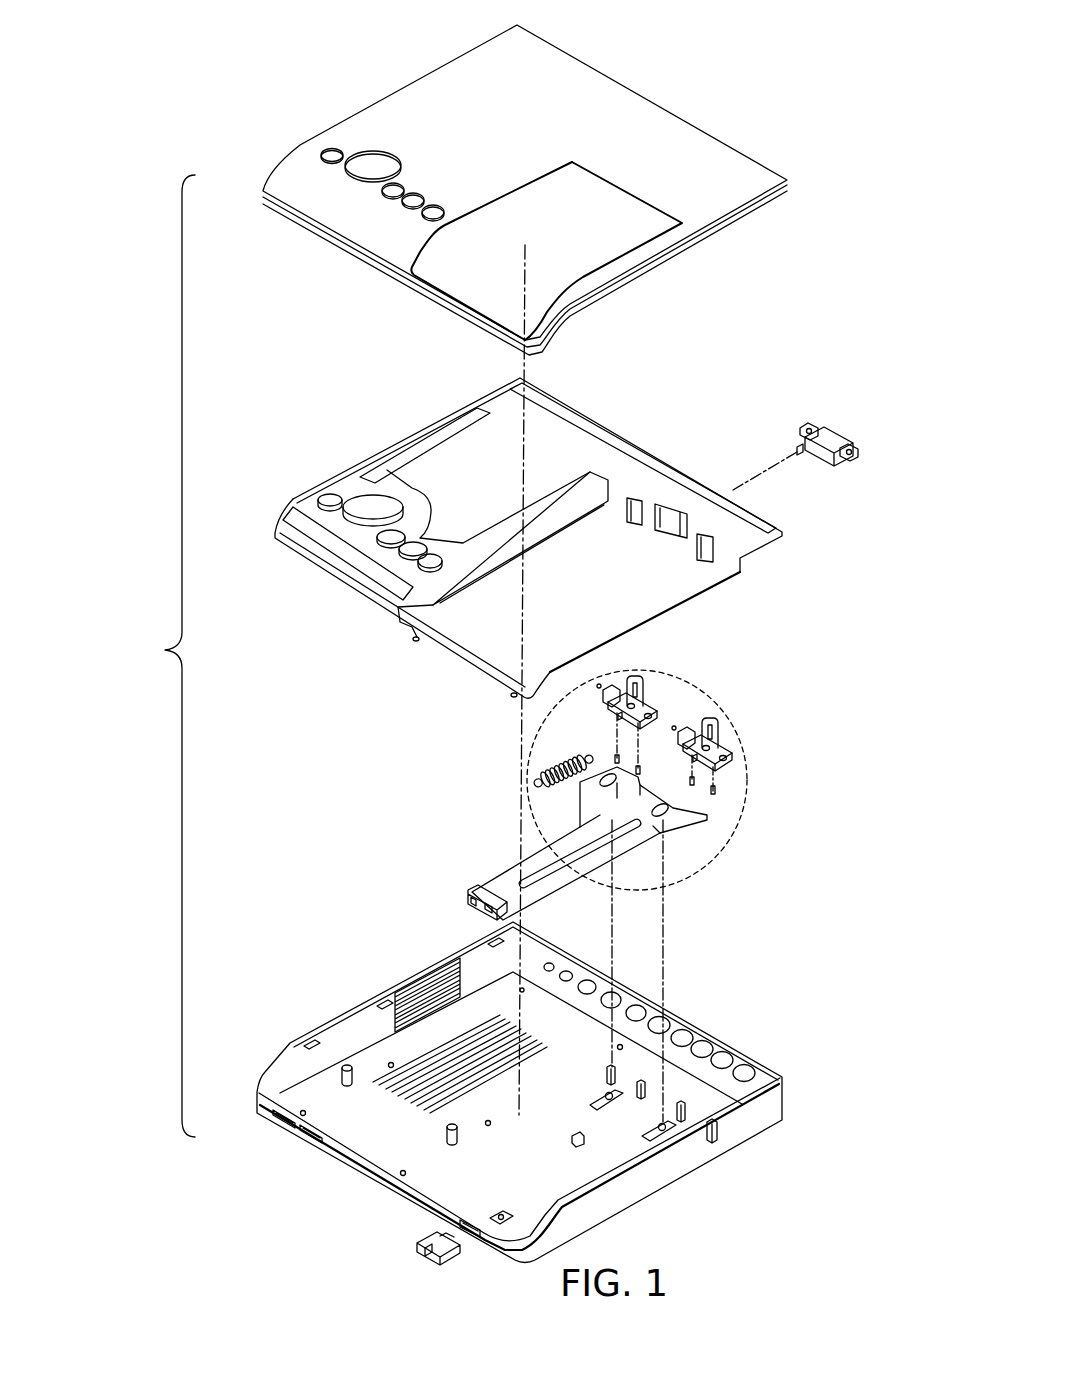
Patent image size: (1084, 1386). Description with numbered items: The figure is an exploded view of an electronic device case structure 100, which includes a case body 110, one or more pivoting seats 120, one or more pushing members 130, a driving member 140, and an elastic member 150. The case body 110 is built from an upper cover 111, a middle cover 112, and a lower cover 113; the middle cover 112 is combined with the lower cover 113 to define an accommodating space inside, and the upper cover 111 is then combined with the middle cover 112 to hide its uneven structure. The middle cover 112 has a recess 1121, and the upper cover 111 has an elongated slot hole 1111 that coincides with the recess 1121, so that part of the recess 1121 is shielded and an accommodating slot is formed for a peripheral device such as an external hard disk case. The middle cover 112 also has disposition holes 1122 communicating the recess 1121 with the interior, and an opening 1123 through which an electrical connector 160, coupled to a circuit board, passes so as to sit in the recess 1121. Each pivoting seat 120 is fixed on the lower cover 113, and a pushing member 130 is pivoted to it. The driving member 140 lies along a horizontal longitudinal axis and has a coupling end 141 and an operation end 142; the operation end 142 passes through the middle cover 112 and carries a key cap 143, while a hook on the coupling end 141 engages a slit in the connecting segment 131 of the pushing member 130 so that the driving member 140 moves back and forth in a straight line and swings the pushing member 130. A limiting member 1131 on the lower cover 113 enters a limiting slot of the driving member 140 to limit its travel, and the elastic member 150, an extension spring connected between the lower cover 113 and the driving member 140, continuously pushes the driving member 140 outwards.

The electronic device case structure 100 is at (327, 103).
The case body 110 is at (147, 656).
The upper cover 111 is at (690, 140).
The elongated slot hole 1111 is at (580, 232).
The middle cover 112 is at (615, 470).
The recess 1121 is at (490, 627).
The disposition holes 1122 is at (631, 521).
The opening 1123 is at (677, 531).
The lower cover 113 is at (745, 1130).
The limiting member 1131 is at (610, 1102).
The pivoting seat 120 is at (628, 1074).
The pushing member 130 is at (664, 694).
The connecting segment 131 is at (615, 723).
The driving member 140 is at (494, 866).
The coupling end 141 is at (680, 817).
The operation end 142 is at (470, 886).
The key cap 143 is at (418, 1256).
The elastic member 150 is at (538, 775).
The electrical connector 160 is at (829, 430).